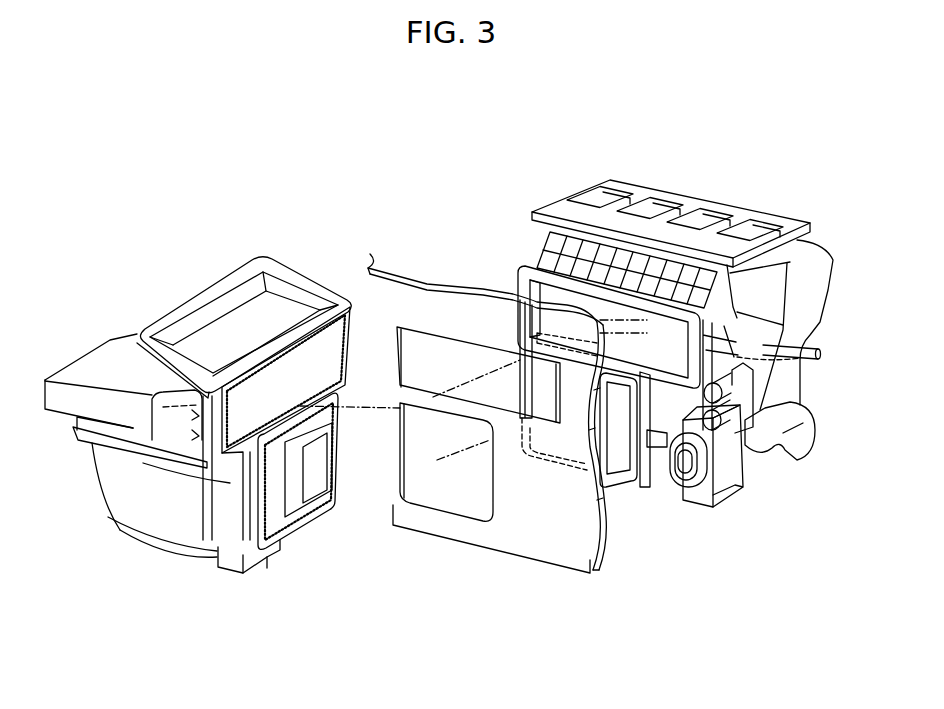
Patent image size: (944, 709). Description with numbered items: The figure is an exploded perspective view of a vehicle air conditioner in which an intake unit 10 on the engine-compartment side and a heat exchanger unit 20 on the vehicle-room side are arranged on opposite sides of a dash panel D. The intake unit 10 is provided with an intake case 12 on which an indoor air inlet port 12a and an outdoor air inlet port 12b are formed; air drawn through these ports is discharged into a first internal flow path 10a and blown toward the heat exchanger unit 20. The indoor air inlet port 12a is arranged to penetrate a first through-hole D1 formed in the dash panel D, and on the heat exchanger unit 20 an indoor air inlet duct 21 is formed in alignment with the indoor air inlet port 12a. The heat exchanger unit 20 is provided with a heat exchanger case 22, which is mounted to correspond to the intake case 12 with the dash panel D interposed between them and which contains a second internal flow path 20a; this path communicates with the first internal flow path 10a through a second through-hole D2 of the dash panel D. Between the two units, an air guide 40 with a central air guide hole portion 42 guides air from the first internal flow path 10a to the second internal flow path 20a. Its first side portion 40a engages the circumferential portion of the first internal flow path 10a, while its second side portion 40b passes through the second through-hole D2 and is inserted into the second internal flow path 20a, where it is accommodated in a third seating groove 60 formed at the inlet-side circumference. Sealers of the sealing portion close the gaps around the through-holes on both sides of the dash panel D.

The intake unit 10 is at (192, 286).
The intake case 12 is at (118, 375).
The indoor air inlet port 12a is at (290, 390).
The outdoor air inlet port 12b is at (275, 320).
The air guide 40 is at (243, 497).
The first side portion 40a is at (238, 497).
The second side portion 40b is at (263, 560).
The air guide hole portion 42 is at (310, 510).
The dash panel D is at (543, 548).
The first through-hole D1 is at (425, 350).
The second through-hole D2 is at (461, 470).
The first internal flow path 10a is at (388, 505).
The third seating groove 60 is at (596, 572).
The heat exchanger unit 20 is at (693, 192).
The second internal flow path 20a is at (650, 470).
The heat exchanger case 22 is at (820, 250).
The indoor air inlet duct 21 is at (823, 357).